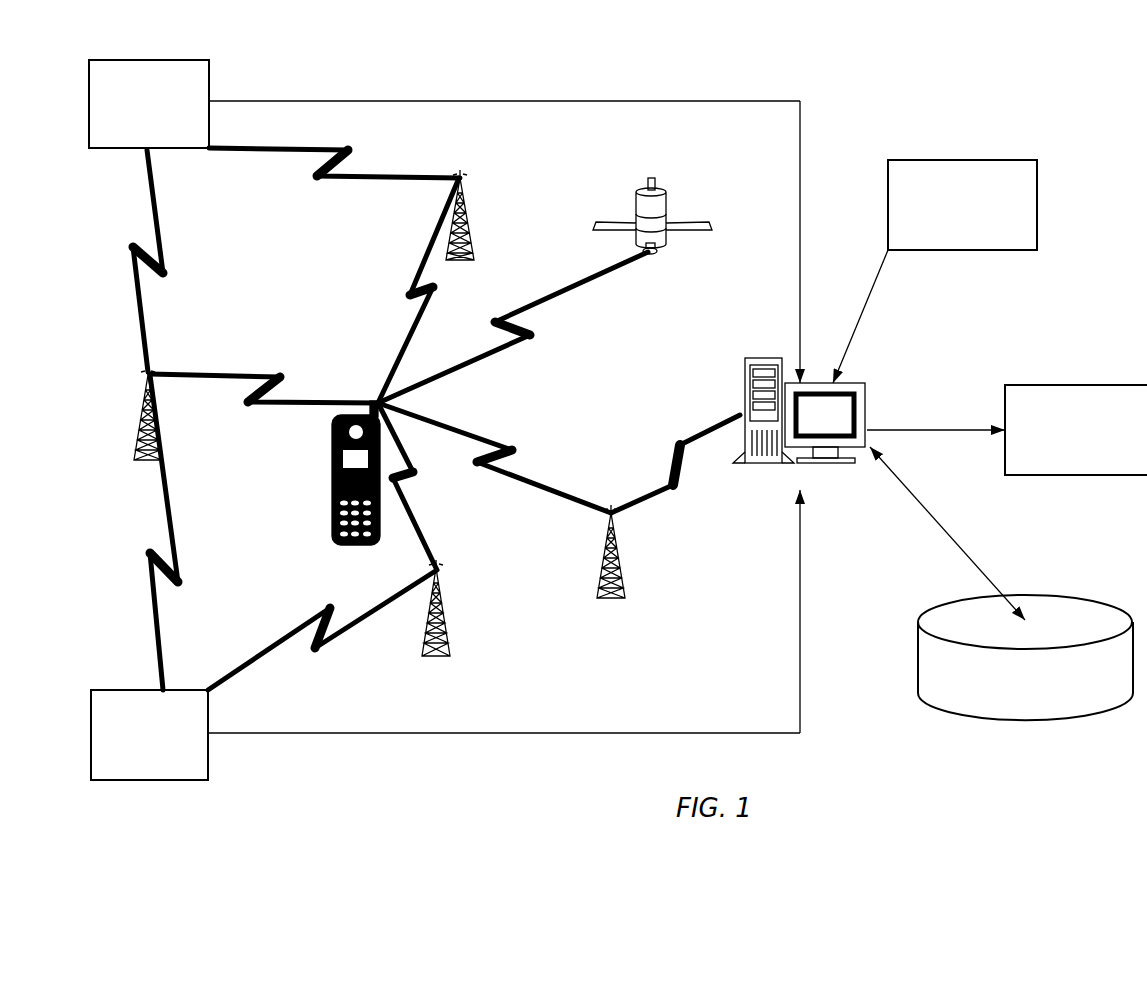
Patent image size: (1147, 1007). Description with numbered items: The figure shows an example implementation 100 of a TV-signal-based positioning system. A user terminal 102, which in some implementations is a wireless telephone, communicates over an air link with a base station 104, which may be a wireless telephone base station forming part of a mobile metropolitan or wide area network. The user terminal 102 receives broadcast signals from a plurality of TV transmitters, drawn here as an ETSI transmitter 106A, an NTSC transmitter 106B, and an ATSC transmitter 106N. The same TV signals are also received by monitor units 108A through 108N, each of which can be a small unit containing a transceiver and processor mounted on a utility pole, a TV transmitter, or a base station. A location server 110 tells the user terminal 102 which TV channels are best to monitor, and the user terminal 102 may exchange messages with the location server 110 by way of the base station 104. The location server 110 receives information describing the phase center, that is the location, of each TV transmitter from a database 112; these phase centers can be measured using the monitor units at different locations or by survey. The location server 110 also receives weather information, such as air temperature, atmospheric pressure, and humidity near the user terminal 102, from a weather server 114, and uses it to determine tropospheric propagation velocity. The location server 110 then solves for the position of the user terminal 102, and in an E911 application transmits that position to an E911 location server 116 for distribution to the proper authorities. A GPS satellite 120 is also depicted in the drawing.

The implementation 100 is at (858, 56).
The user terminal 102 is at (330, 472).
The base station 104 is at (630, 553).
The TV transmitter 106A is at (468, 216).
The TV transmitter 106B is at (160, 415).
The TV transmitter 106N is at (447, 600).
The monitor unit 108A is at (178, 150).
The monitor unit 108N is at (208, 758).
The location server 110 is at (763, 356).
The database 112 is at (1085, 595).
The weather server 114 is at (1040, 230).
The E911 location server 116 is at (1055, 385).
The GPS satellite 120 is at (652, 176).